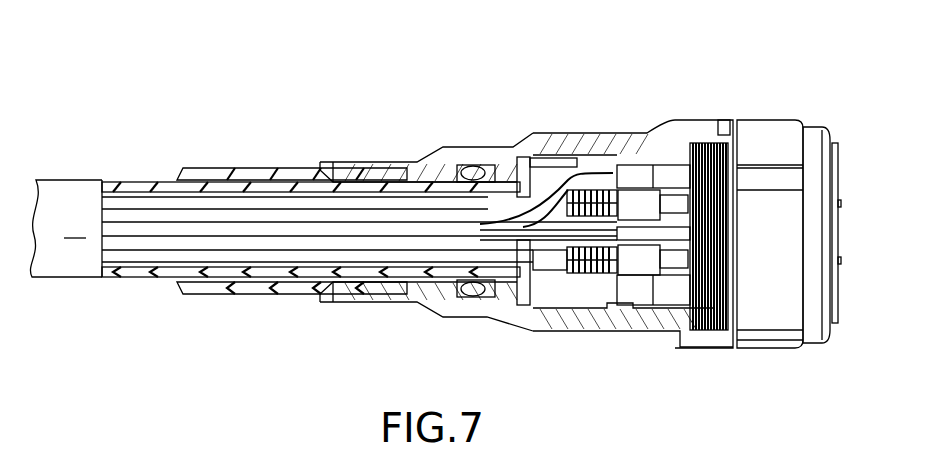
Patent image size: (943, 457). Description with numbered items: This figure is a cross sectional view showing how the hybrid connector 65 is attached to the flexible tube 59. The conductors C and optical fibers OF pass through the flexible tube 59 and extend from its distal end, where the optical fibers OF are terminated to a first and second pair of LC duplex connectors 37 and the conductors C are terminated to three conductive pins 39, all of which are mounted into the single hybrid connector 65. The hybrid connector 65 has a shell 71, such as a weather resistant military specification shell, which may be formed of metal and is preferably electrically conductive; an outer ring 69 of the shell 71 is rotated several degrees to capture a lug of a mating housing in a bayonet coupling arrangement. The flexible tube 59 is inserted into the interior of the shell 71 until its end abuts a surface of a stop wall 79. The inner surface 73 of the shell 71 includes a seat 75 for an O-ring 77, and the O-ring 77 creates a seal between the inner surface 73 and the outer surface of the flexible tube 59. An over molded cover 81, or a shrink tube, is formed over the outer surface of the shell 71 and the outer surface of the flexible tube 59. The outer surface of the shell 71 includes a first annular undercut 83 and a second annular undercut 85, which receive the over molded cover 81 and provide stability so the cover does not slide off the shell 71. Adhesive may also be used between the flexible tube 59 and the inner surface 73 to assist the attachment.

The flexible tube 59 is at (117, 183).
The optical fibers OF is at (120, 197).
The conductors C is at (152, 228).
The over molded cover 81 is at (242, 175).
The second annular undercut 85 is at (400, 183).
The seat 75 is at (483, 303).
The O-ring 77 is at (463, 170).
The stop wall 79 is at (533, 148).
The inner surface of the shell 73 is at (567, 143).
The conductive pins 39 is at (657, 140).
The shell 71 is at (680, 140).
The first annular undercut 83 is at (623, 318).
The LC duplex connectors 37 is at (623, 147).
The hybrid connector 65 is at (826, 98).
The outer ring 69 is at (763, 346).